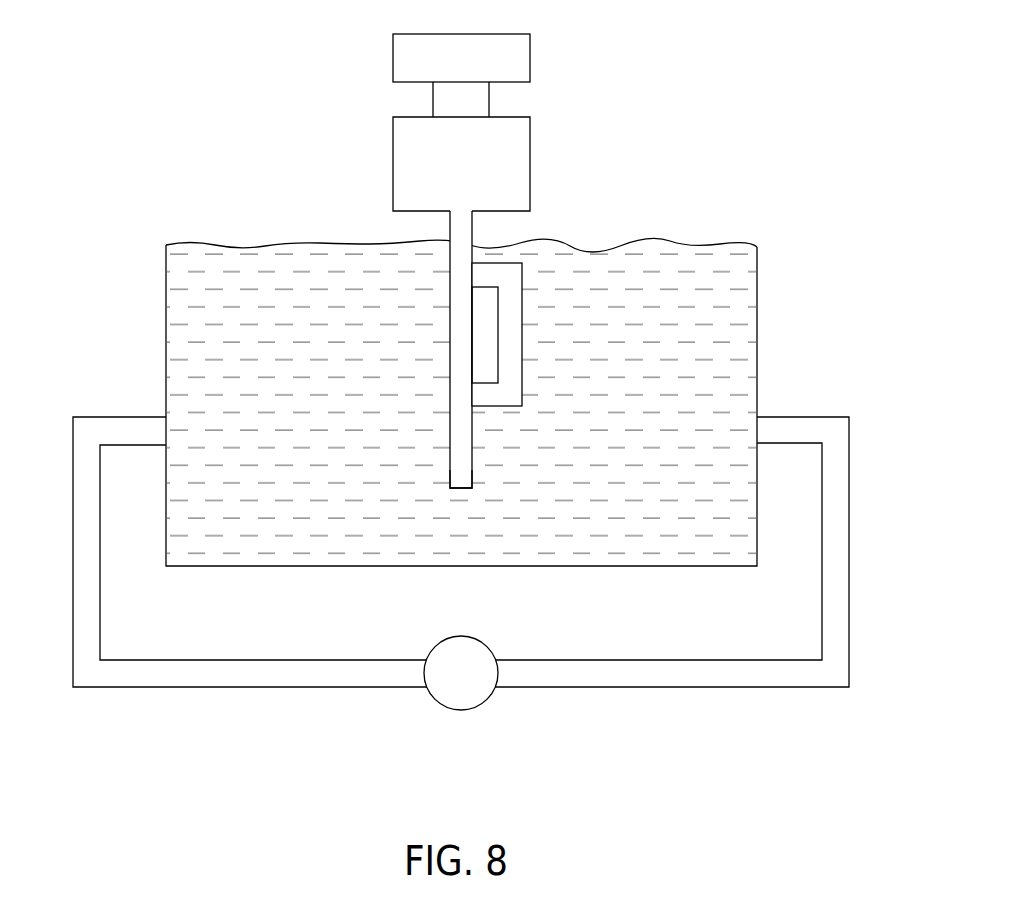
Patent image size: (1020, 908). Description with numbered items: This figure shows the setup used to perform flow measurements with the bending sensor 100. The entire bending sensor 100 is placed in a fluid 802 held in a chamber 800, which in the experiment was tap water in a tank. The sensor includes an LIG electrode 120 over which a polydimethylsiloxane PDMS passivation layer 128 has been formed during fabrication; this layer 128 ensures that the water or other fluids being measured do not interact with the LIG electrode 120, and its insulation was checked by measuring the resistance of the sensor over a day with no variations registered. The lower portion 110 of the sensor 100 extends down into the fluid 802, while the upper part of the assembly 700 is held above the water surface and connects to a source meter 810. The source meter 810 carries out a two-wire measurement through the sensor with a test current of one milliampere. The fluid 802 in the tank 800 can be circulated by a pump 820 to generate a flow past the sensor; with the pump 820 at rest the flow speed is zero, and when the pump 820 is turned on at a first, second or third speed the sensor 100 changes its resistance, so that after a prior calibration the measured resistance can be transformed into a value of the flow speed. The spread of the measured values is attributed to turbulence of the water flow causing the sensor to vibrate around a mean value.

The bending sensor 100 is at (428, 291).
The probe tip 110 is at (455, 473).
The LIG electrode 120 is at (485, 300).
The PDMS passivation layer 128 is at (508, 281).
The sensor assembly 700 is at (378, 164).
The chamber 800 is at (757, 316).
The fluid 802 is at (691, 272).
The source meter 810 is at (524, 53).
The pump 820 is at (460, 712).